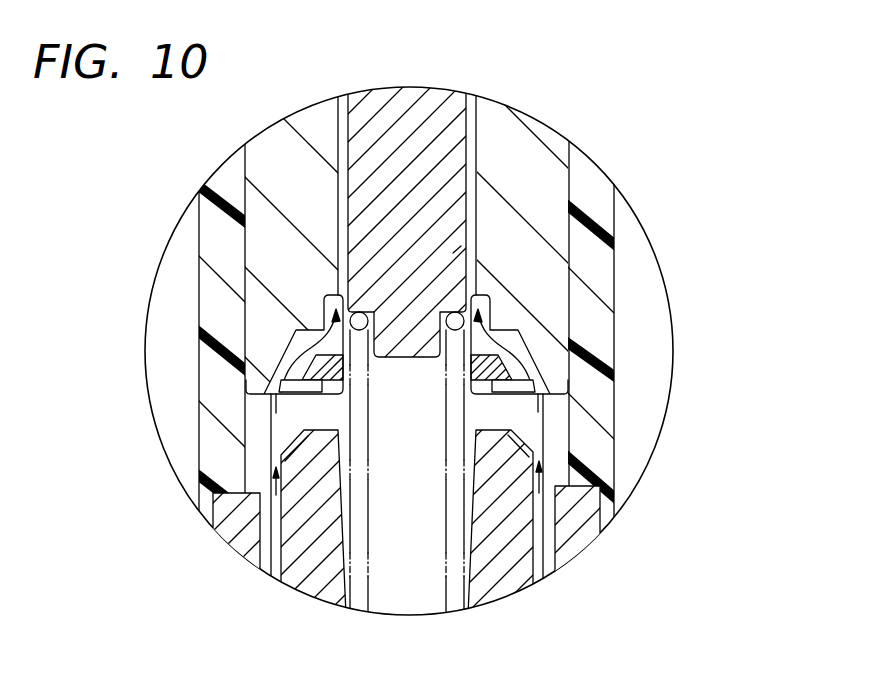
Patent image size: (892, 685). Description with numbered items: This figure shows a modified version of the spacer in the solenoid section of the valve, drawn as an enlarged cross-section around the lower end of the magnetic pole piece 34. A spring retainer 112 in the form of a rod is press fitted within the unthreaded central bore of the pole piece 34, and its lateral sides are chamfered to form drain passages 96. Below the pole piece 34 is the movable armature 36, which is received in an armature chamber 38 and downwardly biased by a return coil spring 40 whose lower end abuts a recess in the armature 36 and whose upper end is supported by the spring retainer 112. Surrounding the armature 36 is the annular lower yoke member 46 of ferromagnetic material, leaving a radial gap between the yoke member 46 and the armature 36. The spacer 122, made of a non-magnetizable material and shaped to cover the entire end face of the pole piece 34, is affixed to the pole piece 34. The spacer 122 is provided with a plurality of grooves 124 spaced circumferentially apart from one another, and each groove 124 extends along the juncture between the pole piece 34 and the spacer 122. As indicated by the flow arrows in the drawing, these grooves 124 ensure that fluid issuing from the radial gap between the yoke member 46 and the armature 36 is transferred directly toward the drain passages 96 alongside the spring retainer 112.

The pole piece 34 is at (538, 162).
The armature 36 is at (512, 572).
The armature chamber 38 is at (425, 445).
The return coil spring 40 is at (455, 593).
The lower yoke member 46 is at (252, 553).
The drain passages 96 is at (454, 252).
The spring retainer 112 is at (388, 114).
The spacer 122 is at (514, 398).
The grooves 124 is at (522, 352).